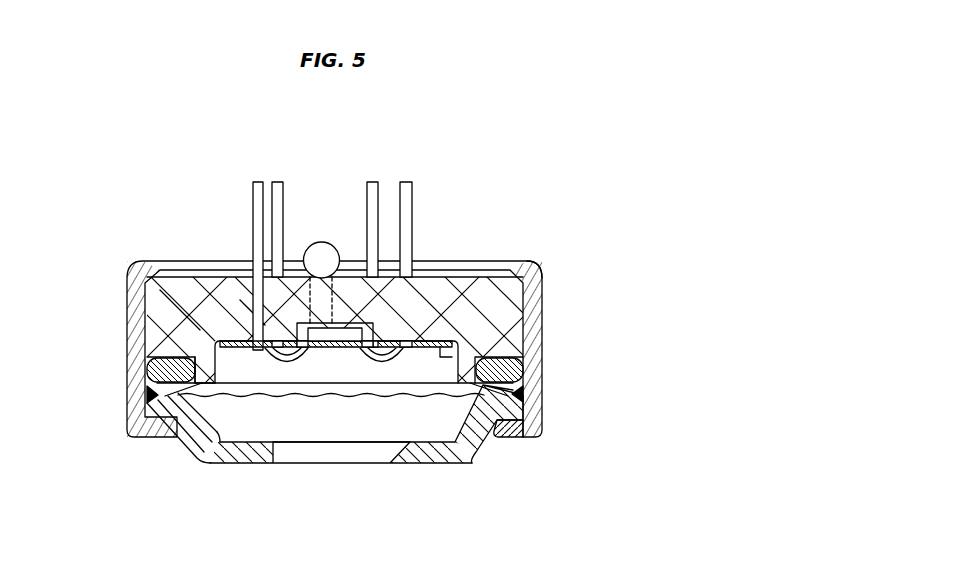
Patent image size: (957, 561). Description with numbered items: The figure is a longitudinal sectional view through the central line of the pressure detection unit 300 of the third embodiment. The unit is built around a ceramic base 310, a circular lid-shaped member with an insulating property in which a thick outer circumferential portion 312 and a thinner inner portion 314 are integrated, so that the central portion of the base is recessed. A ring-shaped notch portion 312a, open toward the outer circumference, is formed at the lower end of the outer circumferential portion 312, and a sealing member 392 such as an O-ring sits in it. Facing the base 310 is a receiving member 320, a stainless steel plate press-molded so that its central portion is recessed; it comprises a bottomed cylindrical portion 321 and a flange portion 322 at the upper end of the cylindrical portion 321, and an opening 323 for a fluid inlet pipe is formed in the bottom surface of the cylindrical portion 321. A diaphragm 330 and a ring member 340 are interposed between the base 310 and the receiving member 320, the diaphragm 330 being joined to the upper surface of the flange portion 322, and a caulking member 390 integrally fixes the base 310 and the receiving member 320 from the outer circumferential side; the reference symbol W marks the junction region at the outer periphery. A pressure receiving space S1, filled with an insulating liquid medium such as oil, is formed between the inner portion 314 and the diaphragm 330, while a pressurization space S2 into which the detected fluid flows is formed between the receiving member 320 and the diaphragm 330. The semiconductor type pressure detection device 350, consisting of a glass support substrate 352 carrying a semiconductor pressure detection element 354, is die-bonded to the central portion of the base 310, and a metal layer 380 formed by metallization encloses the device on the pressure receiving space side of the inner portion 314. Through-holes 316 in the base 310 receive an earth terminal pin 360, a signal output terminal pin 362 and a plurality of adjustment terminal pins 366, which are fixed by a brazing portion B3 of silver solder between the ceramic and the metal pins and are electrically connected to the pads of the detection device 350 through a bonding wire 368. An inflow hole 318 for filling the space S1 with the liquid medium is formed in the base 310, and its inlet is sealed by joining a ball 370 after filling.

The pressure detection unit 300 is at (599, 186).
The base 310 is at (334, 331).
The outer circumferential portion 312 is at (332, 296).
The notch portion 312a is at (140, 355).
The inner portion 314 is at (215, 292).
The through-holes 316 is at (143, 282).
The inflow hole 318 is at (333, 290).
The receiving member 320 is at (359, 449).
The cylindrical portion 321 is at (229, 463).
The flange portion 322 is at (515, 437).
The opening 323 is at (393, 443).
The diaphragm 330 is at (205, 430).
The ring member 340 is at (147, 393).
The semiconductor type pressure detection device 350 is at (366, 362).
The support substrate 352 is at (380, 323).
The pressure detection element 354 is at (350, 333).
The earth terminal pin 360 is at (260, 202).
The signal output terminal pin 362 is at (279, 198).
The adjustment terminal pins 366 is at (410, 192).
The bonding wire 368 is at (273, 350).
The ball 370 is at (320, 250).
The metal layer 380 is at (445, 357).
The caulking member 390 is at (543, 343).
The sealing member 392 is at (524, 372).
The weld portion W is at (525, 395).
The pressure receiving space S1 is at (527, 288).
The pressurization space S2 is at (430, 422).
The brazing portion B3 is at (253, 317).